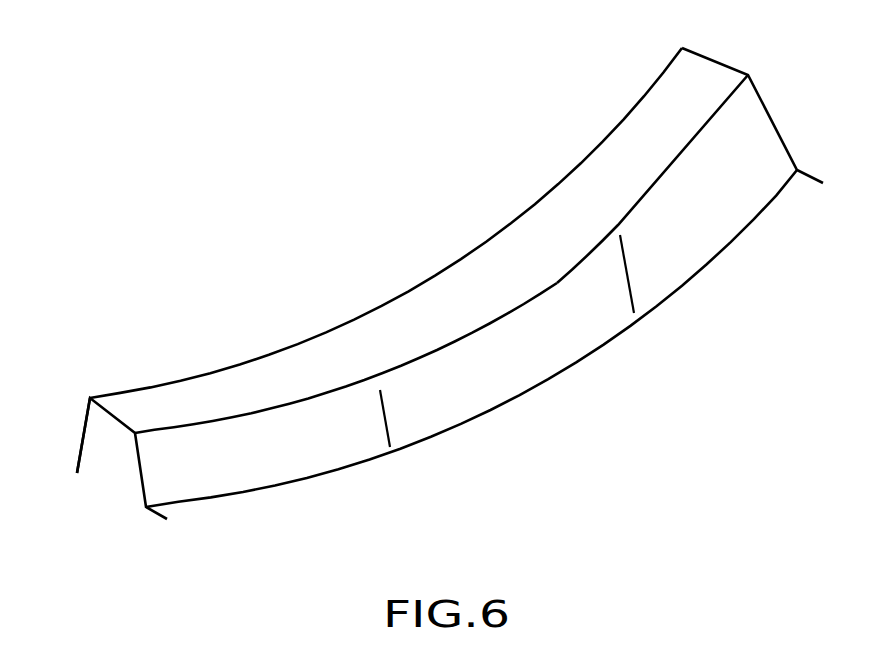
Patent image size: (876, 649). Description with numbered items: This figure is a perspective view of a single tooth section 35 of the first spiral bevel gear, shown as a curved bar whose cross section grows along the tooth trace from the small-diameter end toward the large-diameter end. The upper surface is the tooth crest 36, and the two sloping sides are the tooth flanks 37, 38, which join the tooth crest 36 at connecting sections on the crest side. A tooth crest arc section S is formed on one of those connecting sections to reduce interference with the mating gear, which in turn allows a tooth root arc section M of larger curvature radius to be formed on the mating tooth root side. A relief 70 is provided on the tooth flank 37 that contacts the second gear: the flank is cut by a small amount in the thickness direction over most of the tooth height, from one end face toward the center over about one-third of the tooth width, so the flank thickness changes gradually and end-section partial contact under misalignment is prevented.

The tooth section 35 is at (255, 193).
The tooth crest 36 is at (515, 257).
The tooth flank 37 is at (532, 363).
The tooth flank 38 is at (80, 423).
The relief 70 is at (270, 448).
The tooth crest arc section S is at (418, 288).
The tooth root arc section M is at (78, 479).